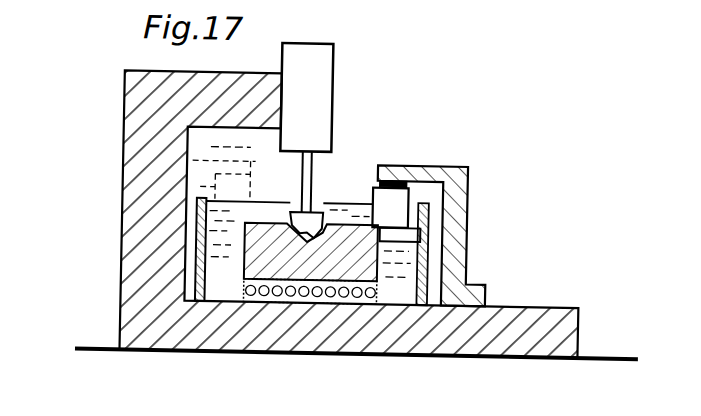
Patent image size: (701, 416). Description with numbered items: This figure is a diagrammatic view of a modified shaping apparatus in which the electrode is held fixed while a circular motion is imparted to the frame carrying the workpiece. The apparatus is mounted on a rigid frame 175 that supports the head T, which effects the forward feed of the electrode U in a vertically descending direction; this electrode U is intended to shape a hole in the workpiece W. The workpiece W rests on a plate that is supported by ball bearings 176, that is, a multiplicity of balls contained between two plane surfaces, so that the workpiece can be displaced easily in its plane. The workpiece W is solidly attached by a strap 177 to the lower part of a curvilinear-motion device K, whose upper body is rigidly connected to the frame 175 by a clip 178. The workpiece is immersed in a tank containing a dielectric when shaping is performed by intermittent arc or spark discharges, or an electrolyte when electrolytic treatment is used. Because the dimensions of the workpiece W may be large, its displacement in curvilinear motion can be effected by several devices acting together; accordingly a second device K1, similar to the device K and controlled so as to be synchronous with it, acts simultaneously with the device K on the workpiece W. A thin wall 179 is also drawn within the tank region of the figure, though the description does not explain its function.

The rigid frame 175 is at (140, 186).
The head T is at (305, 78).
The electrode U is at (310, 218).
The device K1 is at (212, 187).
The partition wall 179 is at (198, 242).
The workpiece W is at (264, 258).
The ball bearings 176 is at (341, 291).
The clip 178 is at (444, 176).
The device K is at (390, 201).
The strap 177 is at (403, 232).